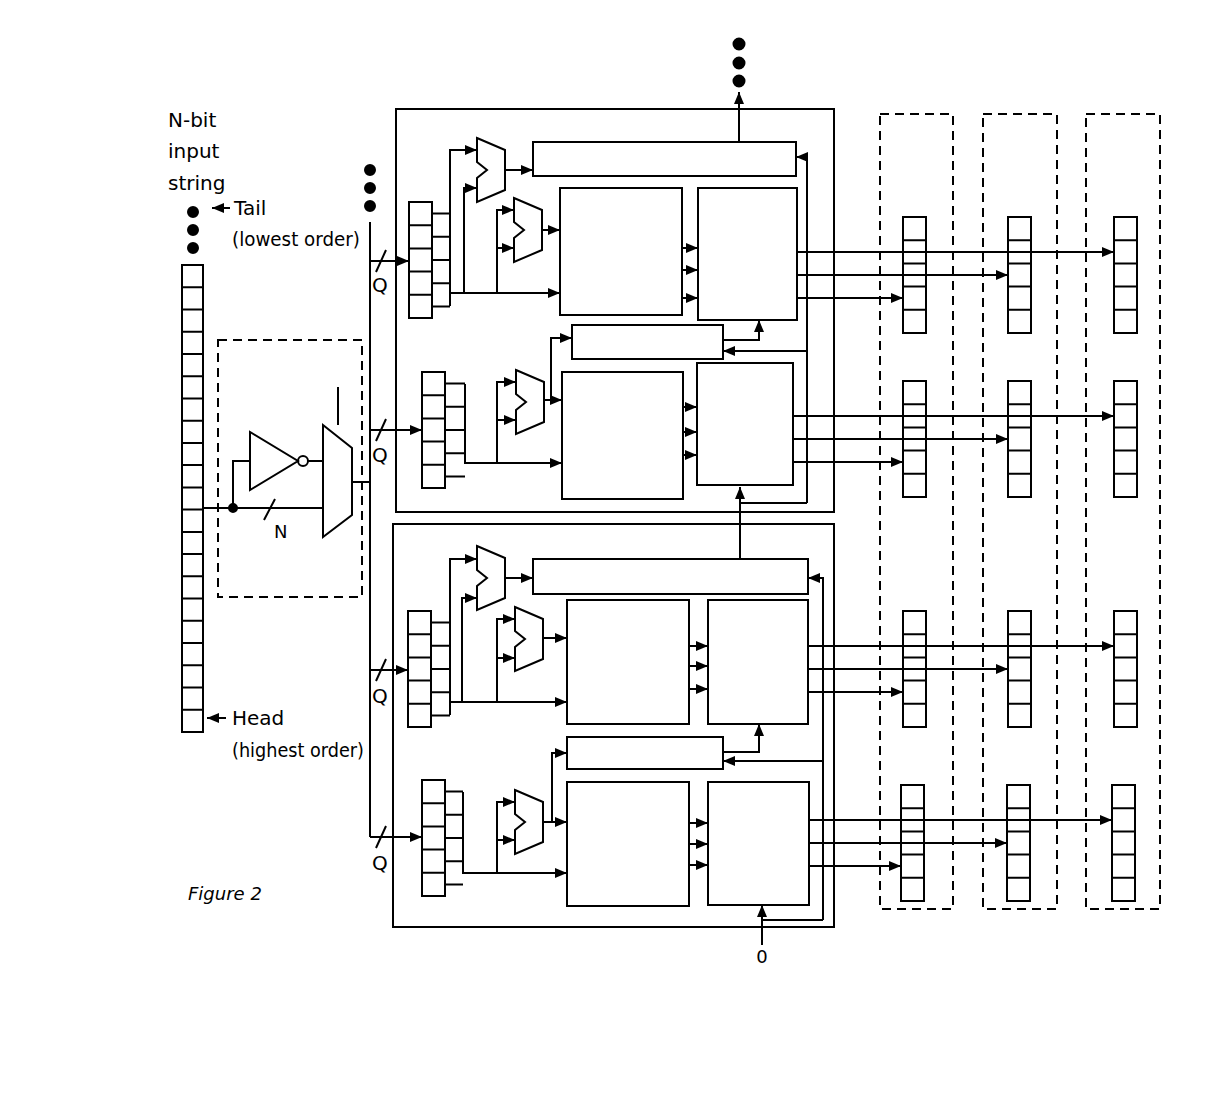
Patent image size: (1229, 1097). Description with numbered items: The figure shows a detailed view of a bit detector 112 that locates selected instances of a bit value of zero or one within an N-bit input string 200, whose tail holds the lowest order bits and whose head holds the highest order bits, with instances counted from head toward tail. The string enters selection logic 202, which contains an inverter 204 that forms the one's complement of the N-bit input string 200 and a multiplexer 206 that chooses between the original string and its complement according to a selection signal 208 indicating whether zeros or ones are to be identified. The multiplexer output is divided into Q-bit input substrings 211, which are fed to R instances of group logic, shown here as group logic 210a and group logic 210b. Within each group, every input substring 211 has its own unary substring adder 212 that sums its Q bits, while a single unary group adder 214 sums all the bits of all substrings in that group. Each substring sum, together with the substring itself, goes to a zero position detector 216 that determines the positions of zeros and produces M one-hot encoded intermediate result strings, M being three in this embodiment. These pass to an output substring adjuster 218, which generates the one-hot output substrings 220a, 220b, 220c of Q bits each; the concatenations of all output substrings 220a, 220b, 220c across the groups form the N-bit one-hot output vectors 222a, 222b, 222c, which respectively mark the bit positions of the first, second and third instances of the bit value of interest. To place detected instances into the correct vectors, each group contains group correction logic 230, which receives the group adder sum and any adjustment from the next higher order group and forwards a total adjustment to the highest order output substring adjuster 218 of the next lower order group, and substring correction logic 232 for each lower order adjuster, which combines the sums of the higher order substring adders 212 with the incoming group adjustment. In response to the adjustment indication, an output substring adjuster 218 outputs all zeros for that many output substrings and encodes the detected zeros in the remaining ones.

The bit detector 112 is at (653, 495).
The N-bit input string 200 is at (204, 298).
The selection logic 202 is at (290, 468).
The inverter 204 is at (266, 433).
The multiplexer 206 is at (323, 535).
The selection signal 208 is at (338, 402).
The group logic 210a is at (613, 725).
The group logic 210b is at (615, 310).
The input substring 211 is at (421, 201).
The unary substring adder 212 is at (536, 262).
The unary group adder 214 is at (497, 142).
The zero position detector 216 is at (624, 547).
The output substring adjuster 218 is at (753, 546).
The output substring 220a is at (913, 217).
The output substring 220b is at (1018, 217).
The output substring 220c is at (1124, 217).
The output vector 222a is at (916, 511).
The output vector 222b is at (1020, 511).
The output vector 222c is at (1123, 511).
The group correction logic 230 is at (670, 368).
The substring correction logic 232 is at (645, 547).